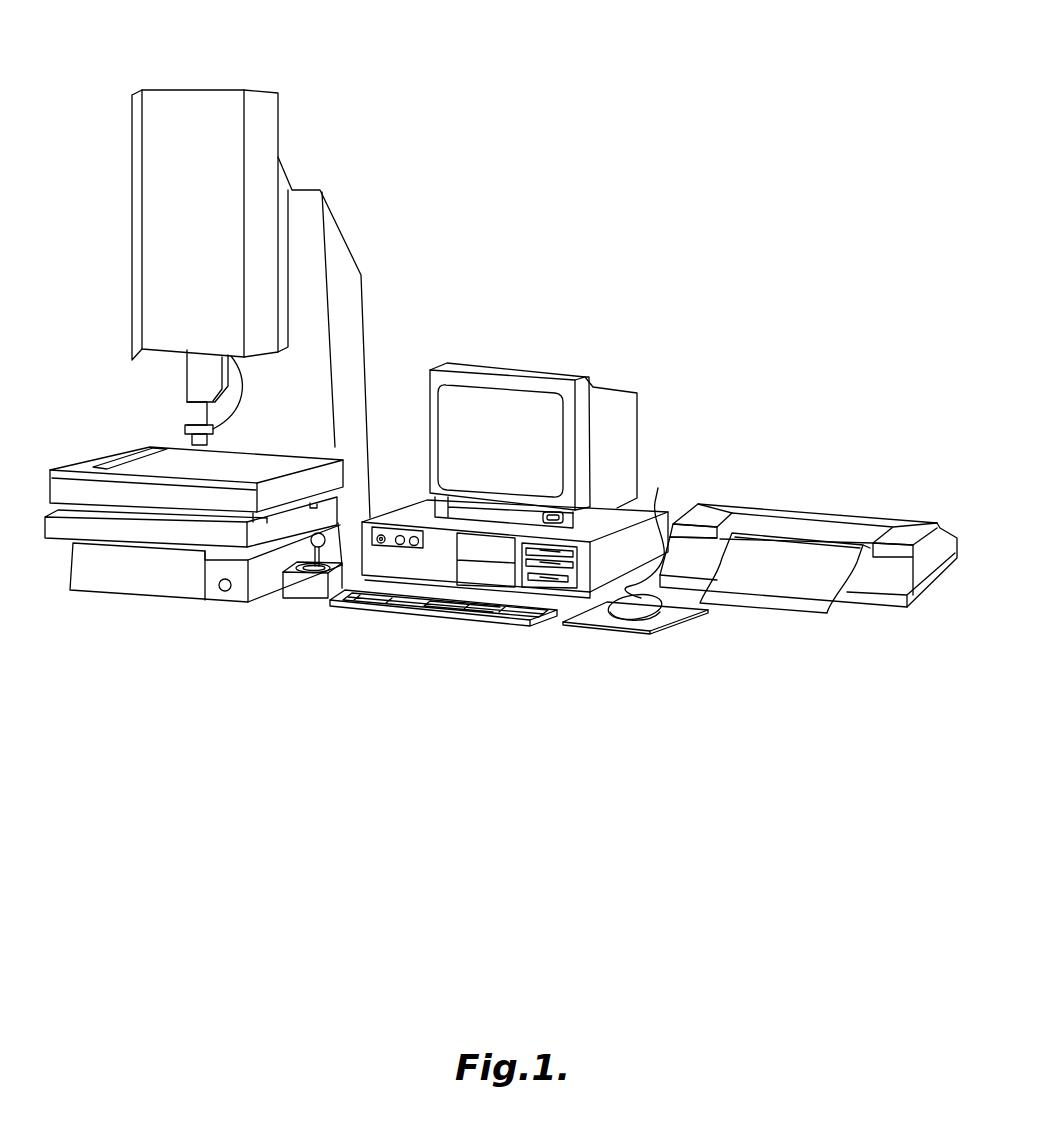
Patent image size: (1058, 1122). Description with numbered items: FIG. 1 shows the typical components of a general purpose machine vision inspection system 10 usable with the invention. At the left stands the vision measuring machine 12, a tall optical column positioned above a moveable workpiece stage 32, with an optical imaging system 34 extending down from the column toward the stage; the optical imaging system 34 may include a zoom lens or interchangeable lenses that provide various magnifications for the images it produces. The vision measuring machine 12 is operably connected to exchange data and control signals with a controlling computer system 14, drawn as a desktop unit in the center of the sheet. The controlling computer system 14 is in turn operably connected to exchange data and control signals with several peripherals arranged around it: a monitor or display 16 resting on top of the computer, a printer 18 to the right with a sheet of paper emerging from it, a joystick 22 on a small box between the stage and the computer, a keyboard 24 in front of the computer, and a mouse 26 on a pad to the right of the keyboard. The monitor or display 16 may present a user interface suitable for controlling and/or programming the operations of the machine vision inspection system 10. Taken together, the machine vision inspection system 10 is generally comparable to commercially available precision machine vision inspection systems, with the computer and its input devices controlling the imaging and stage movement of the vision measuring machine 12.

The machine vision inspection system 10 is at (645, 161).
The vision measuring machine 12 is at (192, 90).
The controlling computer system 14 is at (643, 508).
The monitor or display 16 is at (514, 370).
The printer 18 is at (818, 512).
The joystick 22 is at (305, 602).
The keyboard 24 is at (427, 615).
The mouse 26 is at (637, 611).
The moveable workpiece stage 32 is at (103, 457).
The optical imaging system 34 is at (186, 355).